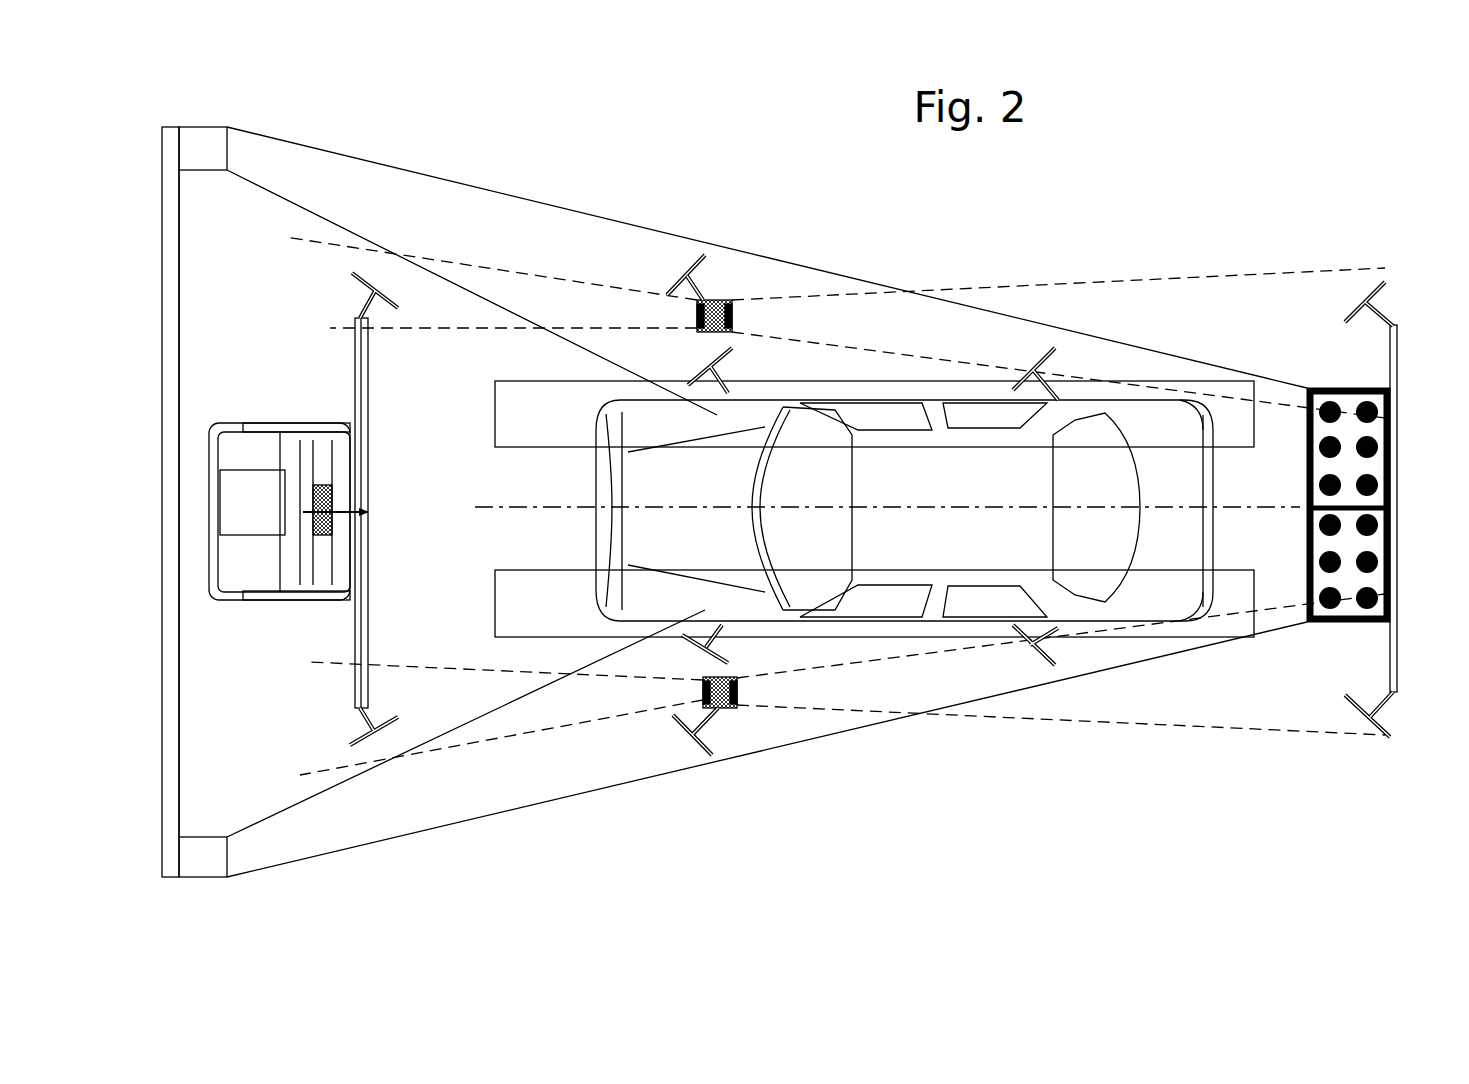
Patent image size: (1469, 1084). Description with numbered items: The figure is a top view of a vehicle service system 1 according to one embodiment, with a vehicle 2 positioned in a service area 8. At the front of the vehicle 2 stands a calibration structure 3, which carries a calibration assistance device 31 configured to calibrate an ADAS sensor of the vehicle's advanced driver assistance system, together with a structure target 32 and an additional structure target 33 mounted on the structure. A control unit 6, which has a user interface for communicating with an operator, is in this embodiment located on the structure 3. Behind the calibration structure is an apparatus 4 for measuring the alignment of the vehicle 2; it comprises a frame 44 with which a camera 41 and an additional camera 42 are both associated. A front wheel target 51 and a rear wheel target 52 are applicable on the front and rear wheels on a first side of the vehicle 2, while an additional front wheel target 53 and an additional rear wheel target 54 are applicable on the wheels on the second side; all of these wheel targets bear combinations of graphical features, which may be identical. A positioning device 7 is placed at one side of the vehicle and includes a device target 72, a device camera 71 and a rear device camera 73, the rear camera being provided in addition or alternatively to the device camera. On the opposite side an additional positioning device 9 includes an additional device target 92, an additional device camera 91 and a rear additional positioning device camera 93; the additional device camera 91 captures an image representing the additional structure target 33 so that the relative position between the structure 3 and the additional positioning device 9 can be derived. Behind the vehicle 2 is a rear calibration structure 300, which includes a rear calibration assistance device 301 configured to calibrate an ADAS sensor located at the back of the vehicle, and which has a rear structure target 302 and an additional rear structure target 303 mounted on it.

The vehicle service system 1 is at (560, 178).
The vehicle 2 is at (904, 510).
The calibration structure 3 is at (324, 412).
The apparatus 4 is at (150, 355).
The control unit 6 is at (252, 502).
The positioning device 7 is at (728, 712).
The service area 8 is at (850, 378).
The additional positioning device 9 is at (722, 297).
The calibration assistance device 31 is at (372, 518).
The structure target 32 is at (350, 730).
The additional structure target 33 is at (352, 286).
The camera 41 is at (205, 862).
The additional camera 42 is at (205, 150).
The frame 44 is at (172, 648).
The front wheel target 51 is at (730, 652).
The rear wheel target 52 is at (1028, 650).
The additional front wheel target 53 is at (703, 368).
The additional rear wheel target 54 is at (1036, 367).
The device camera 71 is at (702, 690).
The device target 72 is at (690, 735).
The rear device camera 73 is at (738, 692).
The additional device camera 91 is at (696, 318).
The additional device target 92 is at (672, 276).
The rear additional positioning device camera 93 is at (730, 303).
The rear calibration structure 300 is at (1415, 383).
The rear calibration assistance device 301 is at (1355, 468).
The rear structure target 302 is at (1380, 745).
The additional rear structure target 303 is at (1346, 314).